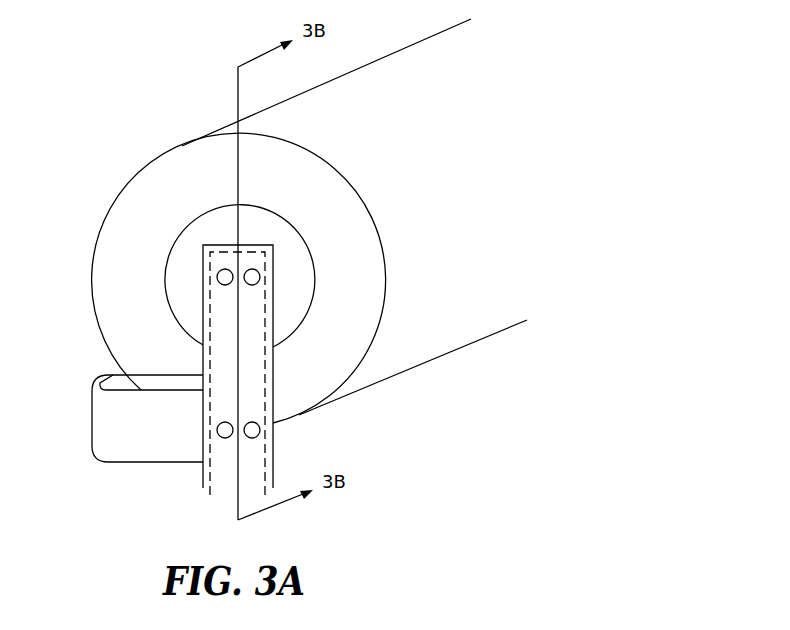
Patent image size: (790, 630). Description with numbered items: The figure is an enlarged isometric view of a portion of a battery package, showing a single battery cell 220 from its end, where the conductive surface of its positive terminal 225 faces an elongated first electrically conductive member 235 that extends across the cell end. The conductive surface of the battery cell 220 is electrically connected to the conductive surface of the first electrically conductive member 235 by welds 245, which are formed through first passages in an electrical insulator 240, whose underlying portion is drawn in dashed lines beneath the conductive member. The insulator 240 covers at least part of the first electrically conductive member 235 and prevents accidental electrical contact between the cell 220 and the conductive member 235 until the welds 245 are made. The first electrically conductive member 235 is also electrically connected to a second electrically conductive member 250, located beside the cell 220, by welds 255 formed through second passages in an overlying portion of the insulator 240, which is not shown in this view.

The battery cell 220 is at (435, 358).
The positive terminal 225 is at (307, 243).
The first electrically conductive member 235 is at (202, 313).
The electrical insulator 240 is at (208, 365).
The welds 245 is at (255, 276).
The second electrically conductive member 250 is at (132, 462).
The welds 255 is at (253, 429).